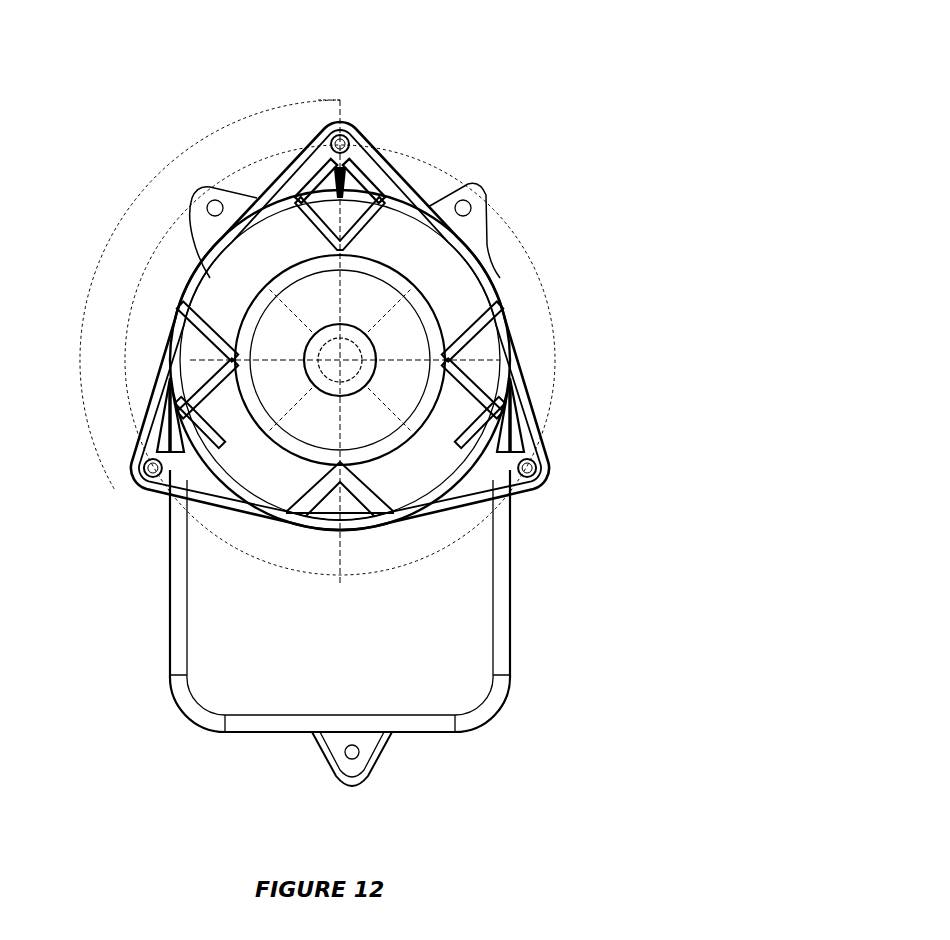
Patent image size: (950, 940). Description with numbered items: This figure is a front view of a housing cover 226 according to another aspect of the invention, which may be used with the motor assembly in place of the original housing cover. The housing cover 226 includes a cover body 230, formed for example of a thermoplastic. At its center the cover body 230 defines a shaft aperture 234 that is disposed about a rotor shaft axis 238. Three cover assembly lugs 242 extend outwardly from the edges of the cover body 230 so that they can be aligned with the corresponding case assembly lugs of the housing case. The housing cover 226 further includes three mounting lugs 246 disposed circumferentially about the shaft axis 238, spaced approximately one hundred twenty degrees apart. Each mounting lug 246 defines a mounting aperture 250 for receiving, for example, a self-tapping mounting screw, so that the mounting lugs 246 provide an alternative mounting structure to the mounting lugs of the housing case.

The housing cover 226 is at (358, 408).
The cover body 230 is at (493, 288).
The shaft aperture 234 is at (370, 362).
The rotor shaft axis 238 is at (343, 355).
The cover assembly lug 242 is at (205, 208).
The mounting lug 246 is at (357, 138).
The mounting aperture 250 is at (348, 136).